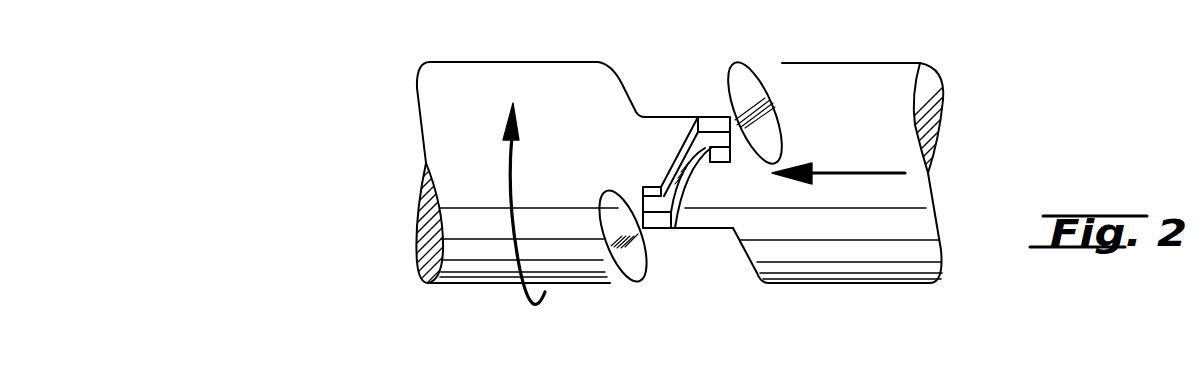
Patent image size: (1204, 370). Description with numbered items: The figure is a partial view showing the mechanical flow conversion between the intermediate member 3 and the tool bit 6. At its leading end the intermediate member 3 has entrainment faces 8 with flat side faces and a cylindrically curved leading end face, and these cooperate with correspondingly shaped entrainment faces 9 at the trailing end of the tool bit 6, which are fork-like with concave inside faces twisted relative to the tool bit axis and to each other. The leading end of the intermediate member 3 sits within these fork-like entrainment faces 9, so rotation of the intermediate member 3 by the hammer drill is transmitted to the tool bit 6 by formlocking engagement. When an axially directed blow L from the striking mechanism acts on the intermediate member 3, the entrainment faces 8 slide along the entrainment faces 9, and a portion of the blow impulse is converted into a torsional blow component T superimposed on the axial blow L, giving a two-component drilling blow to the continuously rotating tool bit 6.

The intermediate member 3 is at (855, 262).
The tool bit 6 is at (477, 267).
The entrainment faces 8 is at (698, 213).
The entrainment faces 9 is at (665, 135).
The torsional blow component T is at (508, 155).
The axially directed blow L is at (849, 172).